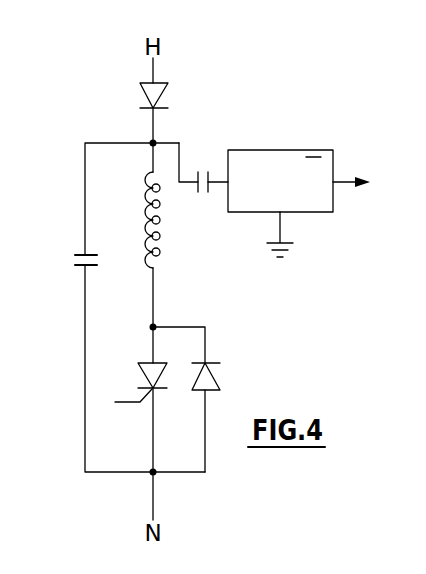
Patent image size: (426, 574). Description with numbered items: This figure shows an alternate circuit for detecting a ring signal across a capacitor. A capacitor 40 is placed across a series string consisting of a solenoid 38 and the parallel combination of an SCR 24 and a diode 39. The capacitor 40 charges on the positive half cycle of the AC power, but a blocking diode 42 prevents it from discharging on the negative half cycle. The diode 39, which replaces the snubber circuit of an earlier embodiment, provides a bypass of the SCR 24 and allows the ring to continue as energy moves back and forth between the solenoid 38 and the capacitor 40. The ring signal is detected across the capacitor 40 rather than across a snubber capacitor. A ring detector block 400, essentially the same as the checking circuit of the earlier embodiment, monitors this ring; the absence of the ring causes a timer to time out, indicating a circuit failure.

The blocking diode 42 is at (163, 92).
The capacitor 40 is at (91, 252).
The solenoid 38 is at (160, 238).
The ring detector block 400 is at (262, 150).
The SCR 24 is at (148, 360).
The diode 39 is at (210, 377).